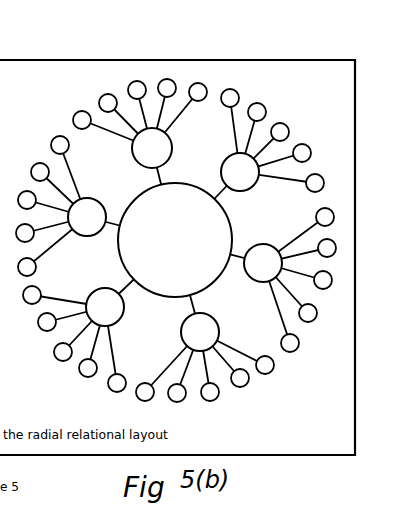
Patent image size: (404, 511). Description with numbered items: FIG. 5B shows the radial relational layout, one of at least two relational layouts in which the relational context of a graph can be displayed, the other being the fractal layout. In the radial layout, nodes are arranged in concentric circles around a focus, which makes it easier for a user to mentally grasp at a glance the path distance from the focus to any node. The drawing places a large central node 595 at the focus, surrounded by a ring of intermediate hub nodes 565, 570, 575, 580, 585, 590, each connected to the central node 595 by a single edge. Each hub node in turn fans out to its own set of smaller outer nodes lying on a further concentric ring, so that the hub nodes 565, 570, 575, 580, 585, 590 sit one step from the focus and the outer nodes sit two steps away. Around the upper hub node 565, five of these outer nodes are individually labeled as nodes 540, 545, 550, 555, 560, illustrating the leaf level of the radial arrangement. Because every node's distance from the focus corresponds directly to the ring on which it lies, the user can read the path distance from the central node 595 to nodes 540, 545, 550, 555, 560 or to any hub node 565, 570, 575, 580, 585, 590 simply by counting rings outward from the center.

The leaf node 540 is at (85, 108).
The leaf node 545 is at (107, 95).
The leaf node 550 is at (139, 81).
The leaf node 555 is at (169, 79).
The leaf node 560 is at (203, 83).
The hub node 565 is at (140, 128).
The hub node 570 is at (272, 140).
The hub node 575 is at (290, 280).
The hub node 580 is at (205, 357).
The hub node 585 is at (131, 301).
The hub node 590 is at (61, 206).
The central node 595 is at (212, 208).